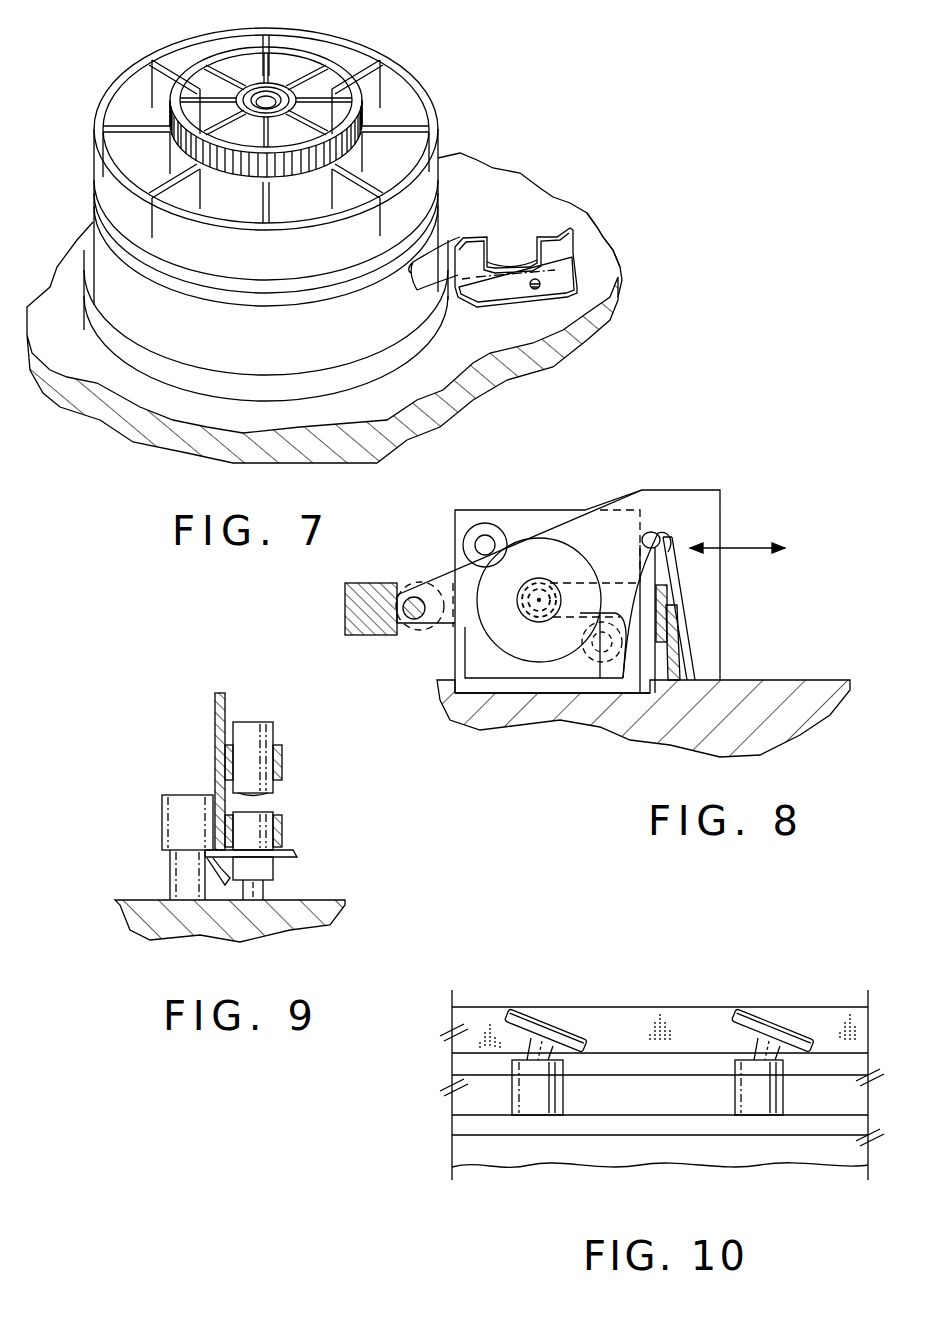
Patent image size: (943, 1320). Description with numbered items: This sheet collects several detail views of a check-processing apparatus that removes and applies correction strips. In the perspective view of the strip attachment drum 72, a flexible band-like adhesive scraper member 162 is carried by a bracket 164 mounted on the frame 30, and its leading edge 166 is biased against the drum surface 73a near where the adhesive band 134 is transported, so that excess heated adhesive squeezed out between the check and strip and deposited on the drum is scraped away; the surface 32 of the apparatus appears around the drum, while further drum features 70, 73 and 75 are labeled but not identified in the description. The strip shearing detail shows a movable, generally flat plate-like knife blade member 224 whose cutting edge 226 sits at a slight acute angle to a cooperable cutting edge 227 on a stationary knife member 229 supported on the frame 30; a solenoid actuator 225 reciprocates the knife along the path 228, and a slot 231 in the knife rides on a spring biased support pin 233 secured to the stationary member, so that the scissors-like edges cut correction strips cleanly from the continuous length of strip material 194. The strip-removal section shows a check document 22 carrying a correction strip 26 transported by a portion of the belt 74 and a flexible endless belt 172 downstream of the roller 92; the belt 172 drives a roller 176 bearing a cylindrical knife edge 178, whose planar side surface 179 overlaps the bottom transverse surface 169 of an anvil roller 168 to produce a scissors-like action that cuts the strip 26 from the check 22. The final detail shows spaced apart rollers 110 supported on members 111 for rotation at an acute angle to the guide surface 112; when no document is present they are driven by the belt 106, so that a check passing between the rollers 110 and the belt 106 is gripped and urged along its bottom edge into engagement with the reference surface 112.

In FIG. 7, the drive gear 70 is at (318, 55).
In FIG. 7, the strip attachment drum 72 is at (402, 64).
In FIG. 7, the spool drum 73 is at (105, 177).
In FIG. 7, the drum surface 73a is at (105, 272).
In FIG. 7, the lower spool ring 75 is at (343, 375).
In FIG. 7, the frame 30 is at (93, 428).
In FIG. 8, the frame 30 is at (797, 728).
In FIG. 7, the surface 32 is at (505, 178).
In FIG. 10, the surface 32 is at (520, 1130).
In FIG. 7, the adhesive scraper member 162 is at (445, 232).
In FIG. 7, the bracket 164 is at (595, 253).
In FIG. 7, the leading edge 166 is at (418, 280).
In FIG. 8, the knife blade member 224 is at (712, 490).
In FIG. 8, the solenoid actuator 225 is at (376, 636).
In FIG. 8, the cutting edge 226 is at (659, 535).
In FIG. 8, the cutting edge 227 is at (660, 563).
In FIG. 8, the path 228 is at (752, 548).
In FIG. 8, the stationary knife member 229 is at (543, 510).
In FIG. 8, the slot 231 is at (626, 680).
In FIG. 8, the spring biased support pin 233 is at (537, 595).
In FIG. 8, the adhesive band 134 is at (668, 600).
In FIG. 8, the continuous length of strip material 194 is at (677, 650).
In FIG. 9, the check document 22 is at (228, 702).
In FIG. 9, the correction strip 26 is at (207, 905).
In FIG. 9, the roller 92 is at (256, 739).
In FIG. 9, the belt 74 is at (228, 764).
In FIG. 9, the roller 176 is at (273, 815).
In FIG. 9, the flexible endless belt 172 is at (228, 832).
In FIG. 9, the planar side surface 179 is at (295, 852).
In FIG. 9, the knife edge 178 is at (286, 868).
In FIG. 9, the anvil roller 168 is at (162, 817).
In FIG. 9, the bottom transverse surface 169 is at (170, 855).
In FIG. 10, the belt 106 is at (676, 1010).
In FIG. 10, the rollers 110 is at (520, 1012).
In FIG. 10, the members 111 is at (550, 1094).
In FIG. 10, the guide surface 112 is at (800, 1115).